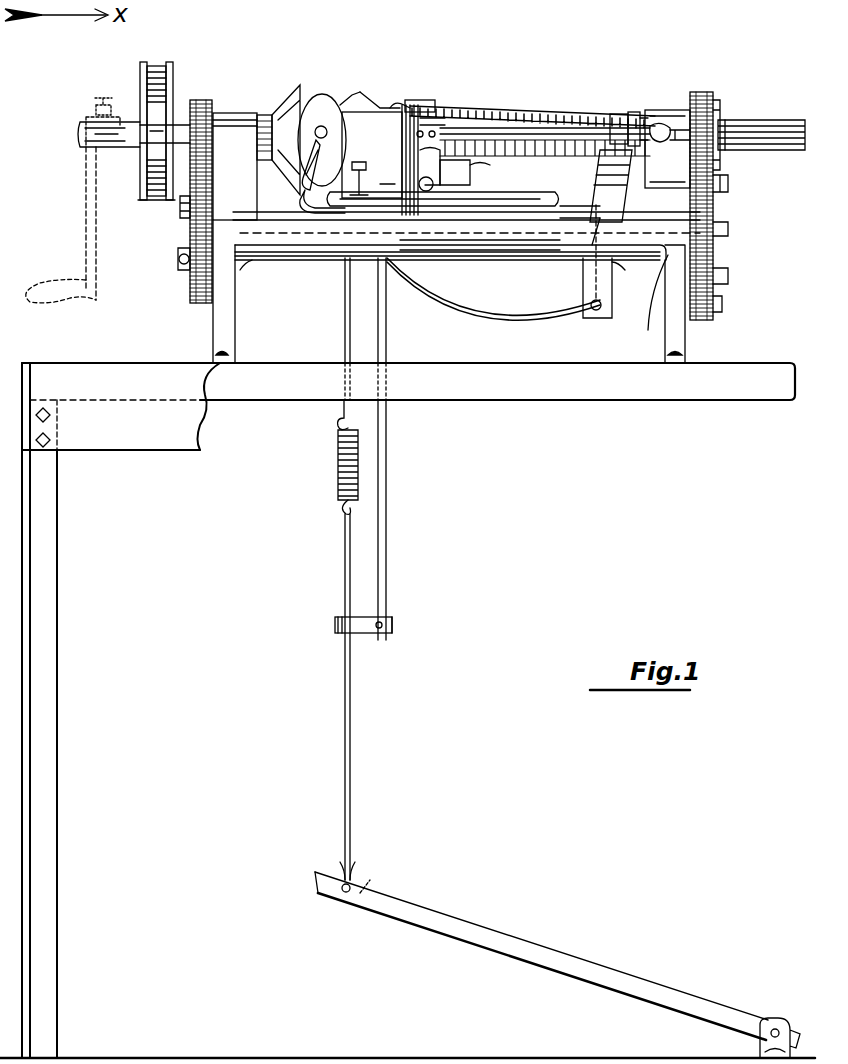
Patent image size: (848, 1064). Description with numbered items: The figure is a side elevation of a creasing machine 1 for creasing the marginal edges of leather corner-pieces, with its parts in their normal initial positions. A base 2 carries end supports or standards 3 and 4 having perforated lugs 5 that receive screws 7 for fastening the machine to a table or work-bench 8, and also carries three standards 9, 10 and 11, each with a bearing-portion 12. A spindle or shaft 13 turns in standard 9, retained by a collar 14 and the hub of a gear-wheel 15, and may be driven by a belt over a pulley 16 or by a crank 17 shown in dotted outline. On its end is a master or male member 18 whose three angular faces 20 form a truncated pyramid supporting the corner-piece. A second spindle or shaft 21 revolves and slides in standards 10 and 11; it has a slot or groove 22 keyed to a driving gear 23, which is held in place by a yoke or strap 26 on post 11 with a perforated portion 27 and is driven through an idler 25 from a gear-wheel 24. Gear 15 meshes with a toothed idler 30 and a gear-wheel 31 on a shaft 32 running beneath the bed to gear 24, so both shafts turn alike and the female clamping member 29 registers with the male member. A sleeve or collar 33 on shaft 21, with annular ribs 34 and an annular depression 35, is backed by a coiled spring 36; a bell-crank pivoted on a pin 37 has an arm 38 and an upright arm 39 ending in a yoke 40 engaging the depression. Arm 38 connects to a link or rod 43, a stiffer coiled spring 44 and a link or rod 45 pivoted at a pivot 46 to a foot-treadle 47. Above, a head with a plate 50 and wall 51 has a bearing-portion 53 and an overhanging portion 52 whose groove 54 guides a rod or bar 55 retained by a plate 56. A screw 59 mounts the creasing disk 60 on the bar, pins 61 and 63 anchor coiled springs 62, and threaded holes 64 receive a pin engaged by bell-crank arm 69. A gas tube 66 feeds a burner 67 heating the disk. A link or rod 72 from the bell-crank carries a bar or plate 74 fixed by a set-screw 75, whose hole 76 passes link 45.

The creasing machine 1 is at (552, 105).
The base 2 is at (540, 228).
The support or standard 3 is at (225, 318).
The support or standard 4 is at (680, 325).
The perforated ears or lugs 5 is at (240, 358).
The screws 7 is at (228, 352).
The table or work-bench 8 is at (286, 400).
The support or standard 9 is at (235, 166).
The support or standard 10 is at (430, 250).
The support or standard 11 is at (657, 246).
The bearing-portion 12 is at (228, 112).
The spindle or shaft 13 is at (78, 131).
The collar 14 is at (262, 115).
The gear-wheel 15 is at (203, 102).
The pulley 16 is at (155, 70).
The crank 17 is at (90, 200).
The master or male member 18 is at (283, 100).
The angularly disposed sides or faces 20 is at (310, 100).
The second spindle or shaft 21 is at (778, 106).
The longitudinally extending slot or groove 22 is at (765, 150).
The driving gear 23 is at (708, 100).
The gear-wheel 24 is at (713, 293).
The idler 25 is at (720, 200).
The yoke or strap 26 is at (715, 165).
The enlarged and perforated portion 27 is at (722, 118).
The female corner-piece clamping member 29 is at (375, 88).
The toothed idler 30 is at (184, 218).
The gear-wheel 31 is at (190, 287).
The shaft 32 is at (280, 256).
The sleeve or collar 33 is at (640, 114).
The annular ribs 34 is at (620, 114).
The annular depression 35 is at (640, 94).
The coiled spring 36 is at (510, 158).
The pin 37 is at (590, 308).
The forwardly extending arm or member 38 is at (488, 312).
The upwardly projecting arm or member 39 is at (600, 205).
The yoke or bifurcated end-member 40 is at (600, 160).
The link or rod 43 is at (340, 318).
The coiled spring 44 is at (335, 463).
The link or rod 45 is at (340, 555).
The pivot 46 is at (343, 898).
The foot-treadle 47 is at (535, 948).
The plate 50 is at (330, 245).
The upwardly extending wall or web-like element 51 is at (377, 178).
The overhanging portion 52 is at (442, 108).
The laterally extending bearing-portion or member 53 is at (432, 185).
The longitudinally extending groove 54 is at (405, 160).
The horizontally disposed rod or bar 55 is at (548, 118).
The plate 56 is at (440, 106).
The screw 59 is at (380, 66).
The creasing disk or plate 60 is at (324, 118).
The screws or pins 61 is at (662, 125).
The coiled springs 62 is at (505, 118).
The screws or pins 63 is at (405, 108).
The screw-threaded holes 64 is at (402, 130).
The gas-conveying tube 66 is at (390, 258).
The burner 67 is at (300, 160).
The arm 69 is at (467, 167).
The link or rod 72 is at (390, 470).
The bar or plate 74 is at (390, 620).
The set-screw 75 is at (392, 633).
The hole 76 is at (335, 620).